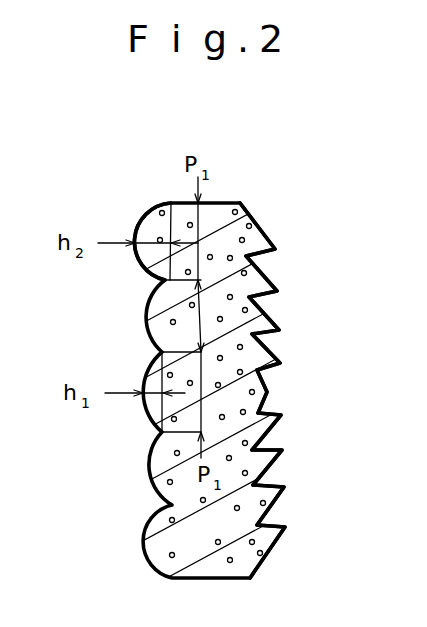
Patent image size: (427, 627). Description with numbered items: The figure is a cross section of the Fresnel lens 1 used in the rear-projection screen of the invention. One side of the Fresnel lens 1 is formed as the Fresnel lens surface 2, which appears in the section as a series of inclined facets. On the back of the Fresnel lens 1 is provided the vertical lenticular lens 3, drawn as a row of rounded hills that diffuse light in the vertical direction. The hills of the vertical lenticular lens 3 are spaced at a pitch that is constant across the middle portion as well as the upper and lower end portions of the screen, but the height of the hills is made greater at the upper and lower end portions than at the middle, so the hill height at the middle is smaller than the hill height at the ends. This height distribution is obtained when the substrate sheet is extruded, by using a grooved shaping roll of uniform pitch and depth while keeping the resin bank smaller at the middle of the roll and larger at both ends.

The Fresnel lens 1 is at (223, 203).
The Fresnel lens surface 2 is at (273, 317).
The vertical lenticular lens 3 is at (147, 222).